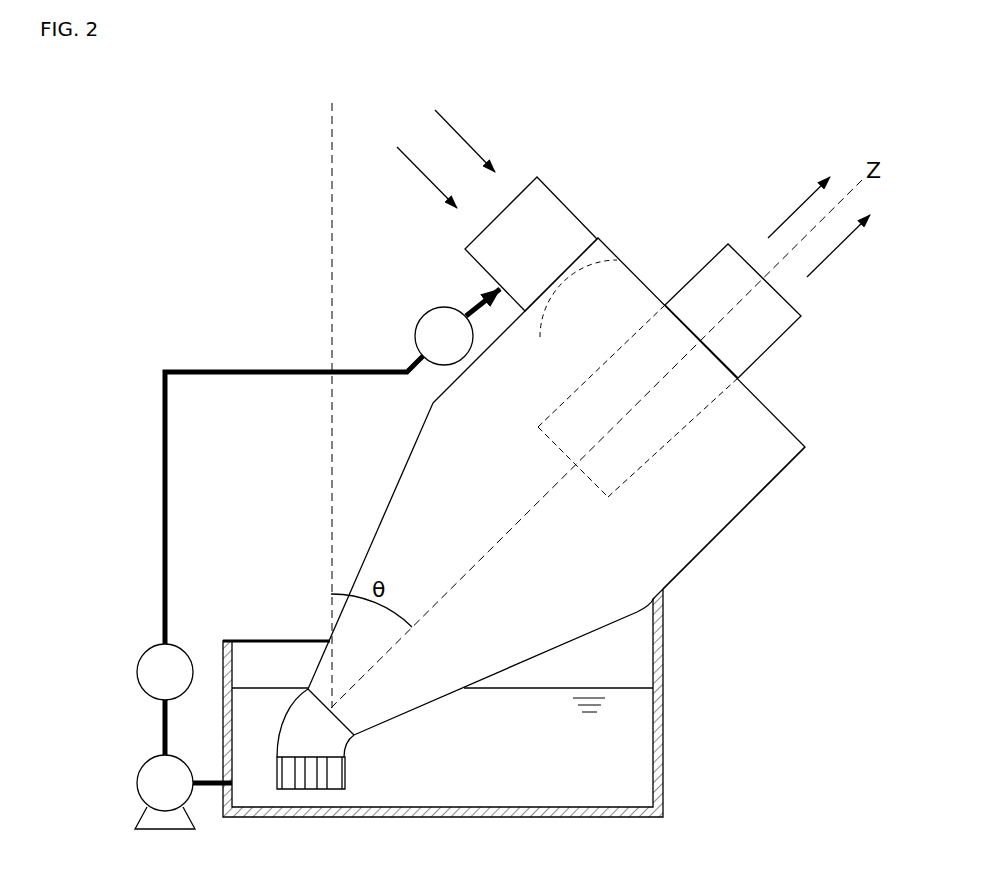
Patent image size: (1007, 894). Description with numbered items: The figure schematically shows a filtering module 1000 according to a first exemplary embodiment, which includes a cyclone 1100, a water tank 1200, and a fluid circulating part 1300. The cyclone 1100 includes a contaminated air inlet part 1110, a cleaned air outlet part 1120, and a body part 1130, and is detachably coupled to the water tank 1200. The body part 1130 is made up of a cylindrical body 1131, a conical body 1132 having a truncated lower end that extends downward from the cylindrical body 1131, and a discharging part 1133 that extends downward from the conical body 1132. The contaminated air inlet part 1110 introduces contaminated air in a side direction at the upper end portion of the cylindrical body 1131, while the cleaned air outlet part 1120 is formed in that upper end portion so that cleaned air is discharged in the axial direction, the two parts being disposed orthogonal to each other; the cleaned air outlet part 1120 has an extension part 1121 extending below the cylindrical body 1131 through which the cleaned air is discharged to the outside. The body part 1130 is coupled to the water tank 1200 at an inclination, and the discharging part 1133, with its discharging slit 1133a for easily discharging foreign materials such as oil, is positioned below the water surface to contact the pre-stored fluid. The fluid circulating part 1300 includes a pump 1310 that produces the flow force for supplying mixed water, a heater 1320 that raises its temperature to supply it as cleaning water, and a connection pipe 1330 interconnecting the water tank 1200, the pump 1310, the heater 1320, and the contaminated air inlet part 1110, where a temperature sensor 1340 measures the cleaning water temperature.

The filtering module 1000 is at (258, 83).
The cyclone 1100 is at (805, 400).
The contaminated air inlet part 1110 is at (548, 220).
The cleaned air outlet part 1120 is at (722, 268).
The extension part 1121 is at (635, 468).
The body part 1130 is at (790, 492).
The cylindrical body 1131 is at (717, 505).
The conical body 1132 is at (560, 625).
The discharging part 1133 is at (352, 768).
The discharging slit 1133a is at (312, 782).
The water tank 1200 is at (682, 777).
The fluid circulating part 1300 is at (130, 630).
The pump 1310 is at (137, 783).
The heater 1320 is at (137, 672).
The connection pipe 1330 is at (162, 457).
The temperature sensor 1340 is at (432, 310).